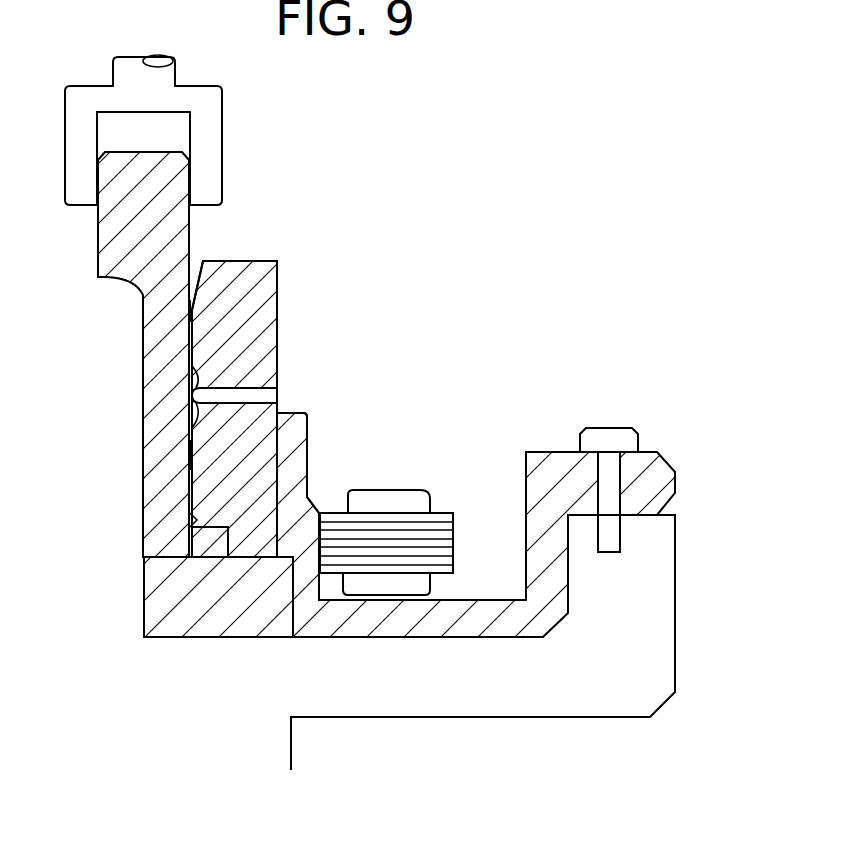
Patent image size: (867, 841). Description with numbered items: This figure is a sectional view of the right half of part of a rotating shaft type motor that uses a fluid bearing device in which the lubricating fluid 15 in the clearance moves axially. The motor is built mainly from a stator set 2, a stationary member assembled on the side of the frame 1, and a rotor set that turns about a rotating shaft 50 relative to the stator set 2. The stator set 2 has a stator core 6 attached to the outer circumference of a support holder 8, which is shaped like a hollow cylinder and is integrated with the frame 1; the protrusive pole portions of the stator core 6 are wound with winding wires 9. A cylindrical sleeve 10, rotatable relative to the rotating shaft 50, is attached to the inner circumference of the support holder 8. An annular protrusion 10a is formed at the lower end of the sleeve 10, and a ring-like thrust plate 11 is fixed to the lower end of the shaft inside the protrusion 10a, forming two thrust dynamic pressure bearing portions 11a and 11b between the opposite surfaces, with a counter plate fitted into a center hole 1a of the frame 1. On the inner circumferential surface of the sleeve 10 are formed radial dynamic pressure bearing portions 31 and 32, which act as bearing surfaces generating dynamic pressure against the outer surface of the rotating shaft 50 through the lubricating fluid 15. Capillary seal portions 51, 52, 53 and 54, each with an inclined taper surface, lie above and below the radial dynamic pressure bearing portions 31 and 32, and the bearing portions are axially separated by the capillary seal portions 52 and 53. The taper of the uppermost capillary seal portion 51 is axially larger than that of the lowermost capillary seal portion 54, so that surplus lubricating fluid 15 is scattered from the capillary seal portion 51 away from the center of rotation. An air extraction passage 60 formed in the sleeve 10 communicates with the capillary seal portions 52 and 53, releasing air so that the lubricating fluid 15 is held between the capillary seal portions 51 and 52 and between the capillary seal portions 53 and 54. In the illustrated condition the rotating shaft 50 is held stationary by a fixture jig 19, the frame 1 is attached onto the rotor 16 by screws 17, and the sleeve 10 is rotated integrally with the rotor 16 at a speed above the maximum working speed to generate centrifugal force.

The frame 1 is at (470, 637).
The center hole 1a is at (293, 605).
The stator set 2 is at (440, 503).
The stator core 6 is at (440, 527).
The support holder 8 is at (303, 463).
The winding wires 9 is at (420, 583).
The sleeve 10 is at (255, 328).
The annular protrusion 10a is at (255, 543).
The thrust plate 11 is at (222, 542).
The thrust dynamic pressure bearing portion 11a is at (193, 518).
The thrust dynamic pressure bearing portion 11b is at (208, 558).
The lubricating fluid 15 is at (190, 291).
The rotor 16 is at (663, 650).
The screws 17 is at (606, 438).
The fixture jig 19 is at (215, 123).
The radial dynamic pressure bearing portion 31 is at (190, 308).
The radial dynamic pressure bearing portion 32 is at (190, 450).
The rotating shaft 50 is at (157, 360).
The capillary seal portion 51 is at (192, 270).
The capillary seal portion 52 is at (190, 372).
The capillary seal portion 53 is at (197, 418).
The capillary seal portion 54 is at (193, 517).
The air extraction passage 60 is at (270, 395).